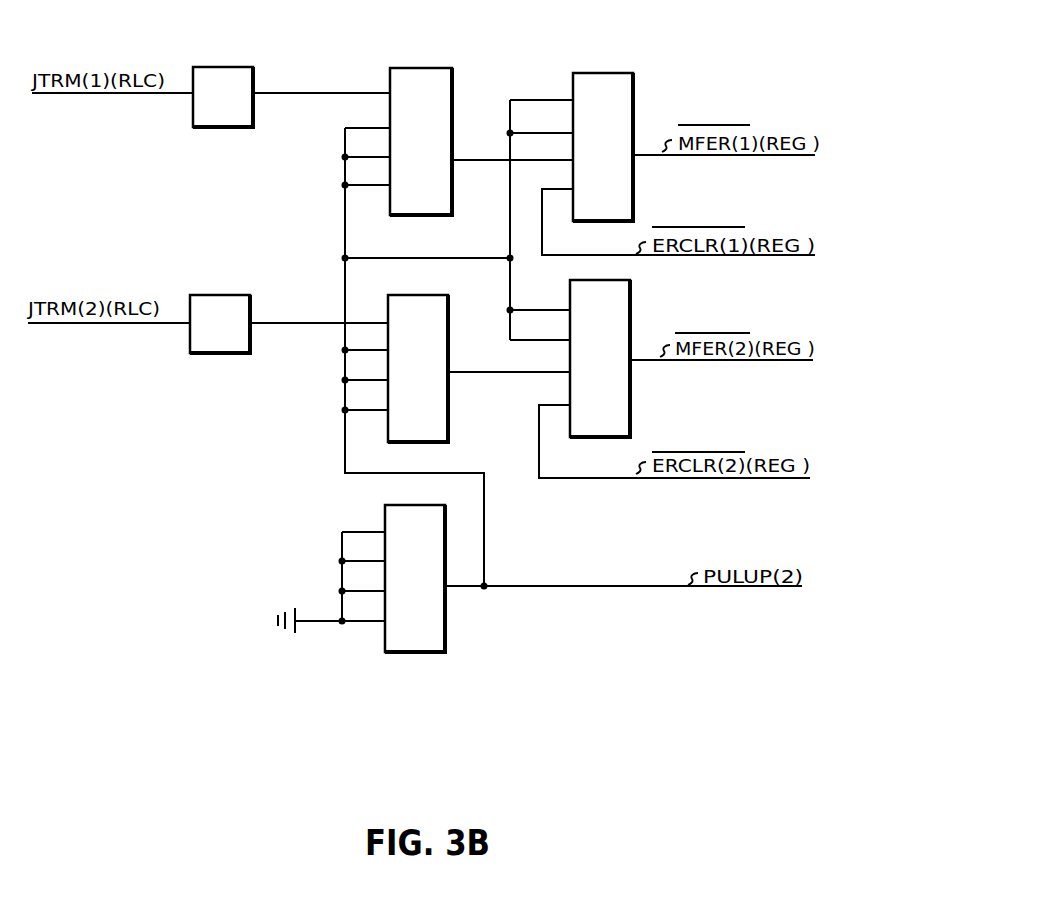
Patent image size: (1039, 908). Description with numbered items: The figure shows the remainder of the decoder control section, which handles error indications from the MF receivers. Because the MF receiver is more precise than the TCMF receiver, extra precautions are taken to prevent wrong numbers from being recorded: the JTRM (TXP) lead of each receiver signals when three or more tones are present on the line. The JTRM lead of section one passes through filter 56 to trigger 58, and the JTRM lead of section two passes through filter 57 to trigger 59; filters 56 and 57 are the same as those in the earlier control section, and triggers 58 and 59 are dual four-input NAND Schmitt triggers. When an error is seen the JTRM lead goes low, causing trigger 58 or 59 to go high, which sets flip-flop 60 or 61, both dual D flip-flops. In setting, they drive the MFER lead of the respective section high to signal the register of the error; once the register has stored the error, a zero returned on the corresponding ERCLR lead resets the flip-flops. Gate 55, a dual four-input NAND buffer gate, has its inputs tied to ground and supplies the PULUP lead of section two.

The gate 55 is at (390, 521).
The filter 56 is at (232, 72).
The filter 57 is at (240, 300).
The trigger 58 is at (423, 78).
The trigger 59 is at (435, 306).
The flip-flop 60 is at (616, 80).
The flip-flop 61 is at (622, 310).